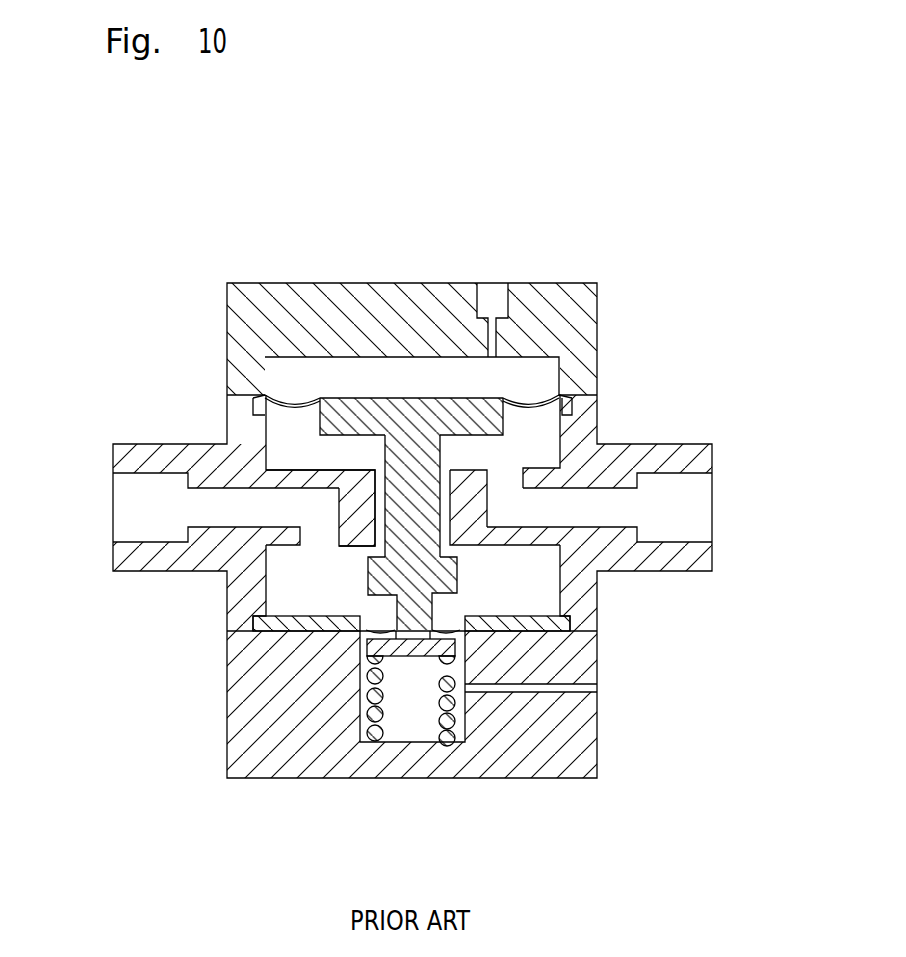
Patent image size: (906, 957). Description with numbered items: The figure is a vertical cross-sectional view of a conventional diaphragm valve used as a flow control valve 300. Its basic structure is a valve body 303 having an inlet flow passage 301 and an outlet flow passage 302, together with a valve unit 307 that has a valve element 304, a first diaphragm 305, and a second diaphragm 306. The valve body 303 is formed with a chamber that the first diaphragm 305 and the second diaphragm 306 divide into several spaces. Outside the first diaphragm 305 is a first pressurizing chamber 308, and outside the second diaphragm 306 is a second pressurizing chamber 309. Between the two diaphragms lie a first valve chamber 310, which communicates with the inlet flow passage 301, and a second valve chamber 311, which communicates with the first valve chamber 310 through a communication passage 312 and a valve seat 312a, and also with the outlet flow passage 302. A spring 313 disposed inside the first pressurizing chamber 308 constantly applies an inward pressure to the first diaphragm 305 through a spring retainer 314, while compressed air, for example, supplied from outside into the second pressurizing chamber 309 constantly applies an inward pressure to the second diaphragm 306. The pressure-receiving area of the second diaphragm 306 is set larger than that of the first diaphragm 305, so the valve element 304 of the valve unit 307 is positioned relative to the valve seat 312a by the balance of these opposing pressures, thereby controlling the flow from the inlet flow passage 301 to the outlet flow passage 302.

The flow control valve 300 is at (575, 228).
The inlet flow passage 301 is at (205, 510).
The outlet flow passage 302 is at (615, 507).
The valve body 303 is at (577, 437).
The valve element 304 is at (378, 647).
The first diaphragm 305 is at (497, 625).
The second diaphragm 306 is at (335, 415).
The valve unit 307 is at (457, 592).
The first pressurizing chamber 308 is at (412, 725).
The second pressurizing chamber 309 is at (400, 373).
The first valve chamber 310 is at (362, 554).
The second valve chamber 311 is at (292, 442).
The communication passage 312 is at (450, 509).
The valve seat 312a is at (373, 582).
The spring 313 is at (375, 742).
The spring retainer 314 is at (364, 636).